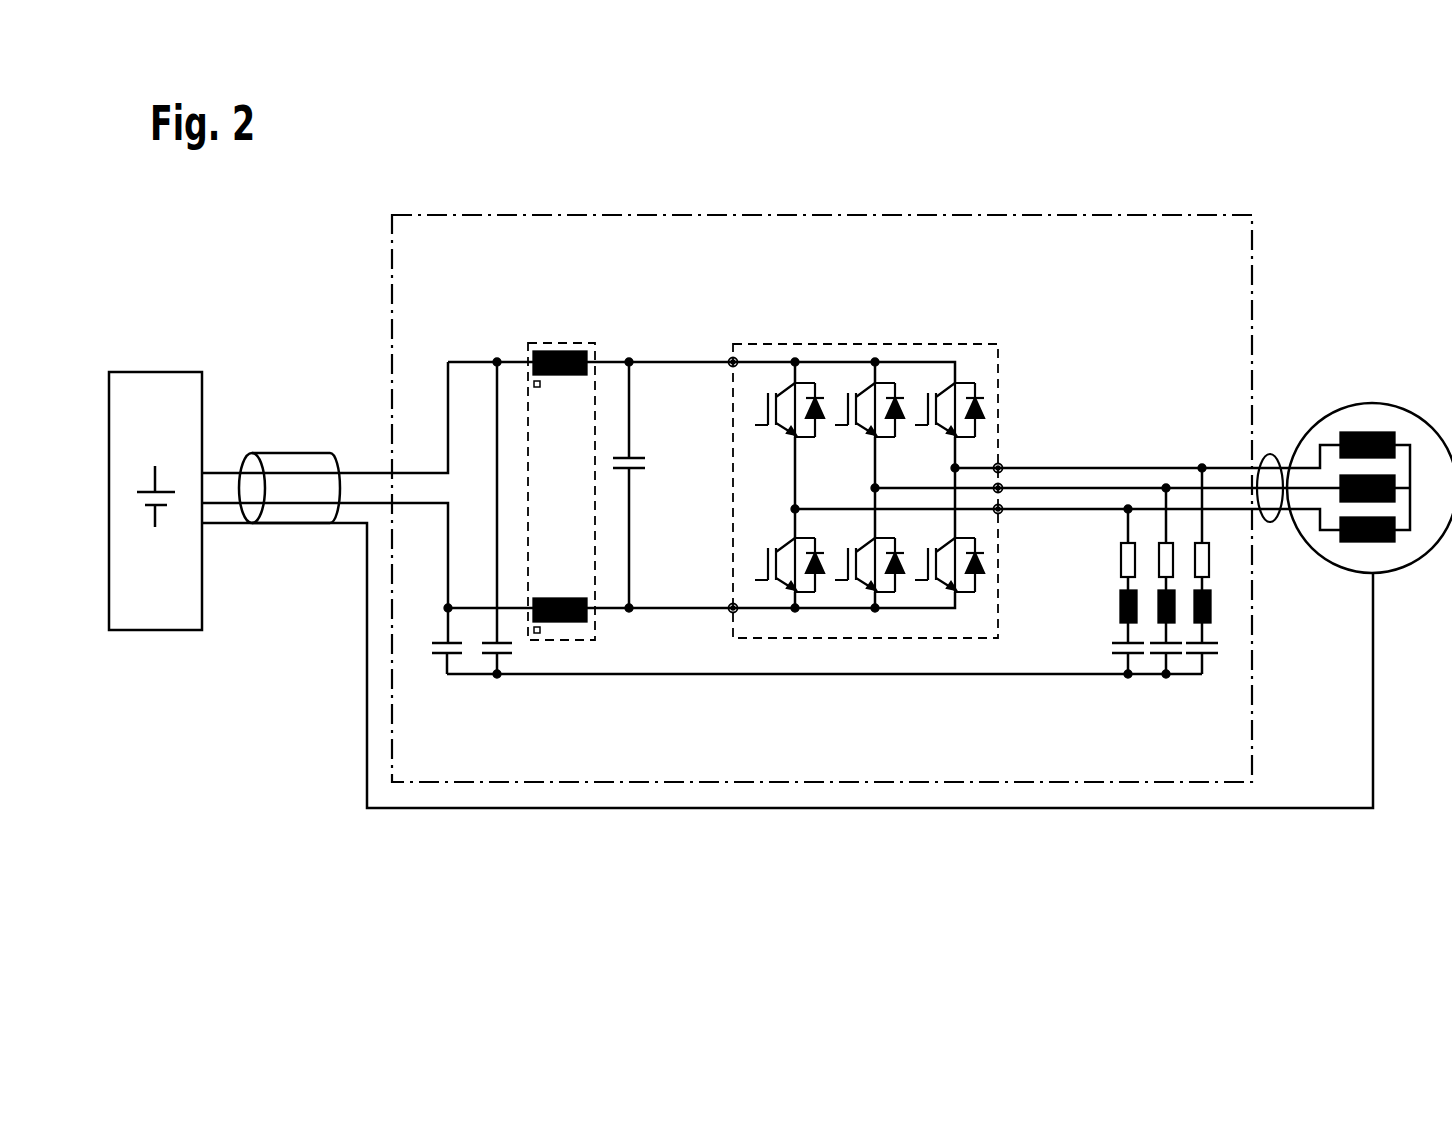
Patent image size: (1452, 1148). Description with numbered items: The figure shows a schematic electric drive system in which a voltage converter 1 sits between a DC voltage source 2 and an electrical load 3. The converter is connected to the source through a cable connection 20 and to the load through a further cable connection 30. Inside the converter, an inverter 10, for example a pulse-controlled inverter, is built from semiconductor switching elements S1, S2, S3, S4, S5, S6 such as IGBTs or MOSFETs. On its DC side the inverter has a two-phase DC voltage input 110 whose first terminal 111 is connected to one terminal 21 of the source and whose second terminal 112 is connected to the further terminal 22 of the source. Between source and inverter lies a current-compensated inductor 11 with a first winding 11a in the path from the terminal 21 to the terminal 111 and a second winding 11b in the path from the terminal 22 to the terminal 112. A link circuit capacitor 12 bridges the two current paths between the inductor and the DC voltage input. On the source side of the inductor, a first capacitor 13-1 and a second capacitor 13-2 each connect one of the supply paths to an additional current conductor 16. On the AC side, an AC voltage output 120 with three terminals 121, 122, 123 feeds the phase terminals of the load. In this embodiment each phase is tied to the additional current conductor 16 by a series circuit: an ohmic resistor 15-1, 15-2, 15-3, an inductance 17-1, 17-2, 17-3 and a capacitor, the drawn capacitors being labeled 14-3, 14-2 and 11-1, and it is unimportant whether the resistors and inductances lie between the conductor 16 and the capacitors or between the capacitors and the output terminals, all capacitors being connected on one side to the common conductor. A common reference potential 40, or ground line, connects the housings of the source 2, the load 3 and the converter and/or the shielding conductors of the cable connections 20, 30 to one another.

The voltage converter 1 is at (917, 215).
The DC voltage source 2 is at (150, 385).
The electrical load 3 is at (1372, 410).
The inverter 10 is at (982, 343).
The inductor 11 is at (581, 343).
The first winding 11a is at (566, 376).
The second winding 11b is at (565, 598).
The filter capacitor 11-1 is at (1215, 658).
The link circuit capacitor 12 is at (635, 470).
The first capacitor 13-1 is at (505, 657).
The second capacitor 13-2 is at (438, 657).
The second capacitor 14-2 is at (1162, 658).
The third capacitor 14-3 is at (1121, 658).
The electrical resistor 15-1 is at (1210, 555).
The electrical resistor 15-2 is at (1170, 550).
The electrical resistor 15-3 is at (1126, 545).
The additional current conductor 16 is at (1005, 676).
The inductance 17-1 is at (1214, 605).
The inductance 17-2 is at (1176, 612).
The inductance 17-3 is at (1121, 615).
The cable connection 20 is at (300, 468).
The first terminal 21 is at (205, 470).
The second terminal 22 is at (205, 505).
The cable connection 30 is at (1272, 458).
The common reference potential 40 is at (610, 808).
The DC voltage input 110 is at (724, 375).
The first terminal 111 is at (730, 358).
The second terminal 112 is at (731, 612).
The AC voltage output 120 is at (1046, 535).
The first terminal 121 is at (1002, 466).
The second terminal 122 is at (1002, 487).
The third terminal 123 is at (1002, 512).
The switching element S1 is at (755, 423).
The switching element S2 is at (835, 423).
The switching element S3 is at (915, 423).
The switching element S4 is at (755, 582).
The switching element S5 is at (835, 582).
The switching element S6 is at (915, 582).